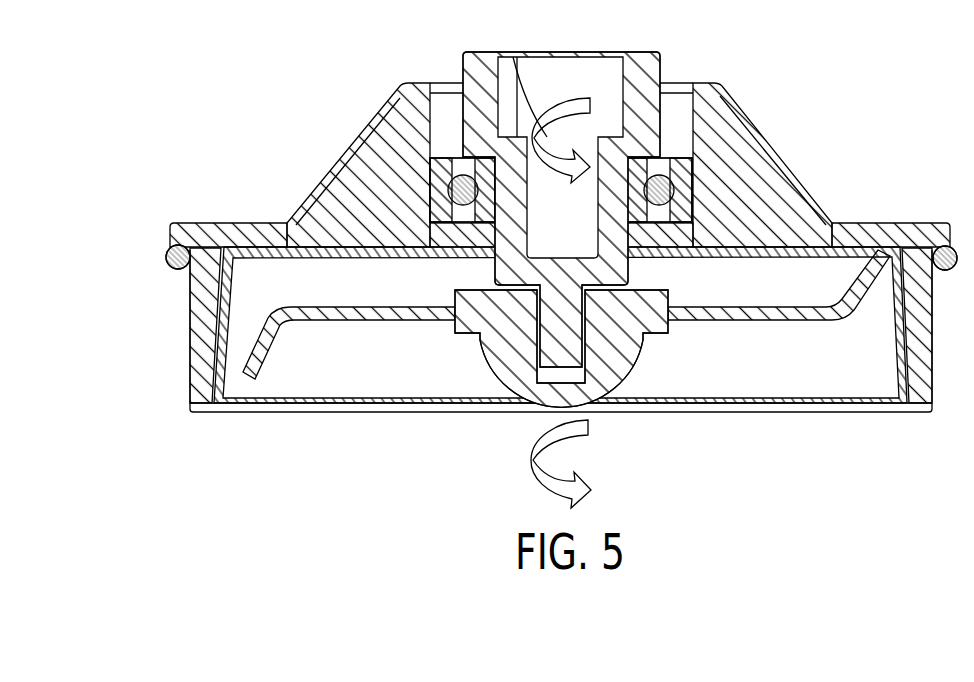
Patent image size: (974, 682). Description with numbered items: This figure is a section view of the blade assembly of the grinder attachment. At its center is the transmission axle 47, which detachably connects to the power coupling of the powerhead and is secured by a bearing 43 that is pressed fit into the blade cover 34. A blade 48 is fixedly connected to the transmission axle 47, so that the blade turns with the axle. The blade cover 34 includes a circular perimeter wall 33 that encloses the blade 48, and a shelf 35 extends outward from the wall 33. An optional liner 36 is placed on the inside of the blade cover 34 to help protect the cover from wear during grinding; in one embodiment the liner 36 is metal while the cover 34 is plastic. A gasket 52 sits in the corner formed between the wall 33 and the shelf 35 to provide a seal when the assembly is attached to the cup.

The circular perimeter wall 33 is at (203, 332).
The blade cover 34 is at (386, 133).
The shelf 35 is at (190, 231).
The liner 36 is at (216, 393).
The bearing 43 is at (657, 200).
The transmission axle 47 is at (643, 63).
The blade 48 is at (428, 312).
The gasket 52 is at (949, 265).